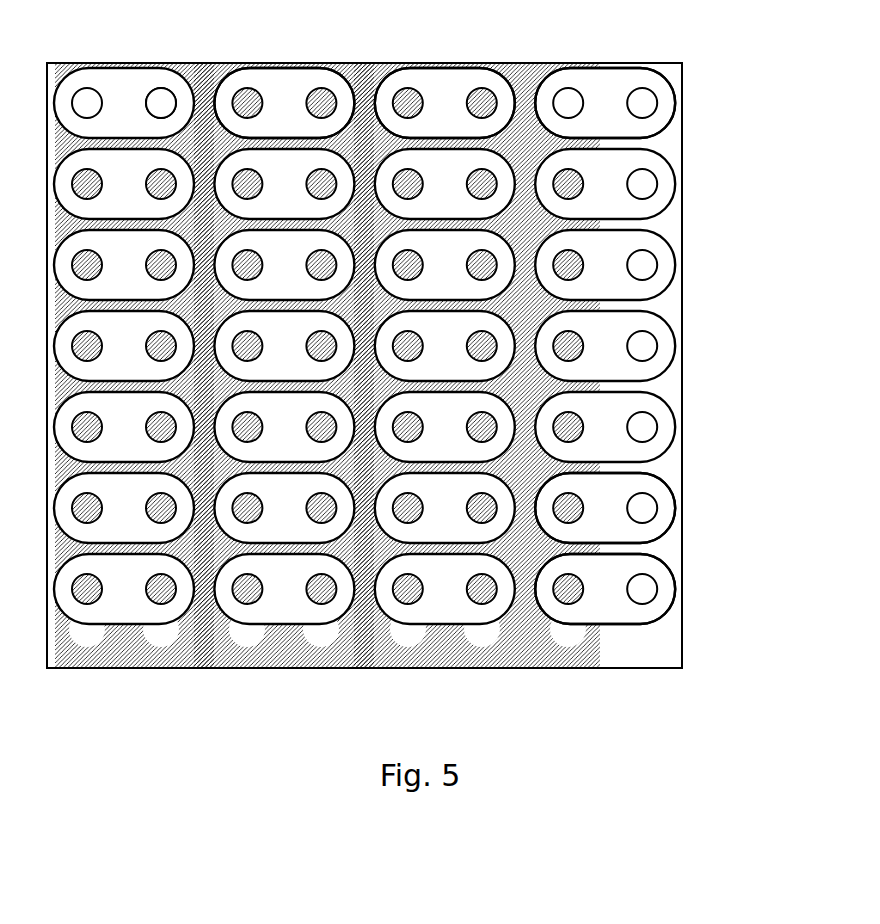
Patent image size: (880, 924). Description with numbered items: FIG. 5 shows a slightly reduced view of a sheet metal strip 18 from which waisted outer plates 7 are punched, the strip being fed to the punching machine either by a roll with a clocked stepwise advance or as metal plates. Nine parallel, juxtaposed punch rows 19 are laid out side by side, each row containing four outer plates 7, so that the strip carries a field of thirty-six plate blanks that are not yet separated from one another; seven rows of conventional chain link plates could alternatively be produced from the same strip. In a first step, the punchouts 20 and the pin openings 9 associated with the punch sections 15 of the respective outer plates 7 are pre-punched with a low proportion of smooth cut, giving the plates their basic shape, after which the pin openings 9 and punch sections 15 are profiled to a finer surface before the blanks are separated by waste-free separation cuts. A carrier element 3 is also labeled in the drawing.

The carrier element 3 is at (122, 75).
The outer plate 7 is at (72, 83).
The pin opening 9 is at (163, 98).
The punch section 15 is at (343, 72).
The sheet metal strip 18 is at (645, 657).
The punch row 19 is at (652, 346).
The punchout 20 is at (197, 135).